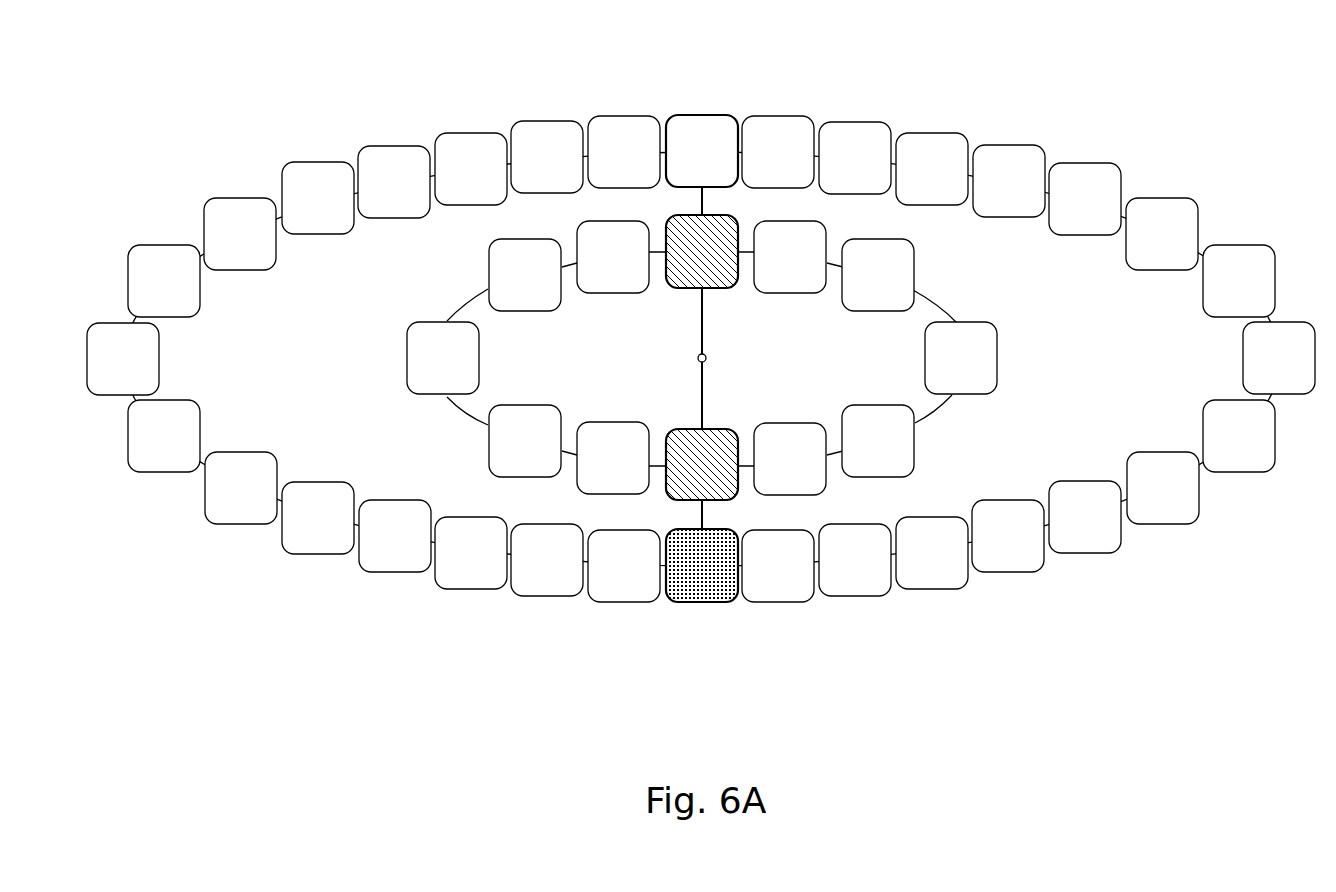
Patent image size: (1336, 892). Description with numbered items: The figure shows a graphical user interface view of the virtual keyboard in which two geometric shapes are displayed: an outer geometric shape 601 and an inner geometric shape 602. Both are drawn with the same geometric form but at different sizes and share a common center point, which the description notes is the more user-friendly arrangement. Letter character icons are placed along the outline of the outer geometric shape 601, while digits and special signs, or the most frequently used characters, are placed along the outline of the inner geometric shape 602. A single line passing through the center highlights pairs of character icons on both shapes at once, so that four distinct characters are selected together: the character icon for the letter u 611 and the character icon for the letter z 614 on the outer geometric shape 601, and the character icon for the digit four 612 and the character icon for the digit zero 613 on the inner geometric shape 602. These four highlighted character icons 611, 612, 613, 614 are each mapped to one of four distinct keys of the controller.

The outer geometric shape 601 is at (1290, 519).
The inner geometric shape 602 is at (1028, 462).
The character icon u 611 is at (701, 128).
The character icon 4 612 is at (701, 276).
The character icon 0 613 is at (701, 443).
The character icon z 614 is at (701, 590).